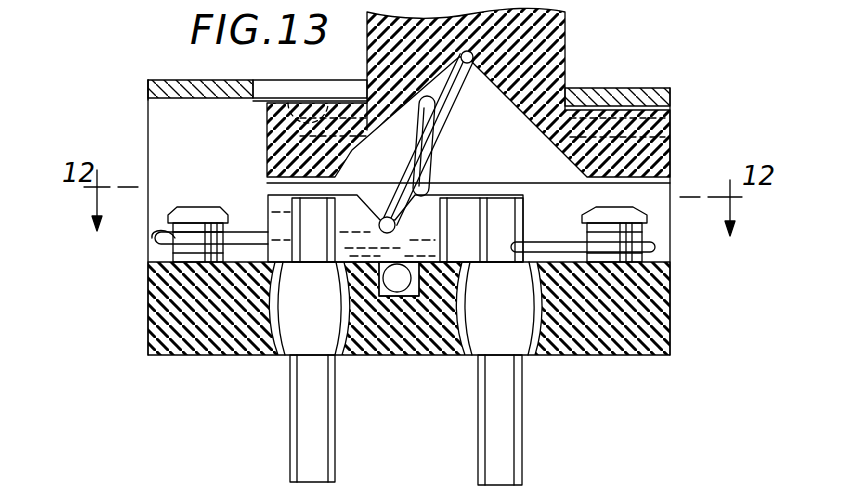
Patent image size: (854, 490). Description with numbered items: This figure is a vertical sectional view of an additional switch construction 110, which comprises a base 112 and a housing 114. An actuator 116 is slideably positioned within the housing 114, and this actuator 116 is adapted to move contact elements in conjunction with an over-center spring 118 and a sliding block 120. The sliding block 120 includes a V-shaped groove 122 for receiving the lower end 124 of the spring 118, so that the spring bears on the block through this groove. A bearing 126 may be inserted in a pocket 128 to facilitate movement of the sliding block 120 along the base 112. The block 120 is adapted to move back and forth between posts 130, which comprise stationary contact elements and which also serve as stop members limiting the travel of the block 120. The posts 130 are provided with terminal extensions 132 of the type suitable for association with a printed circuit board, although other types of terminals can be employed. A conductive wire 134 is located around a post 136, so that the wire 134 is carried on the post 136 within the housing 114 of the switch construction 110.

The switch construction 110 is at (88, 113).
The base 112 is at (210, 352).
The housing 114 is at (190, 80).
The actuator 116 is at (665, 148).
The over-center spring 118 is at (440, 110).
The sliding block 120 is at (428, 200).
The V-shaped groove 122 is at (378, 216).
The lower end of the spring 124 is at (407, 229).
The bearing 126 is at (388, 298).
The pocket 128 is at (407, 292).
The posts 130 is at (300, 212).
The terminal extensions 132 is at (320, 428).
The conductive wire 134 is at (158, 243).
The post 136 is at (178, 207).